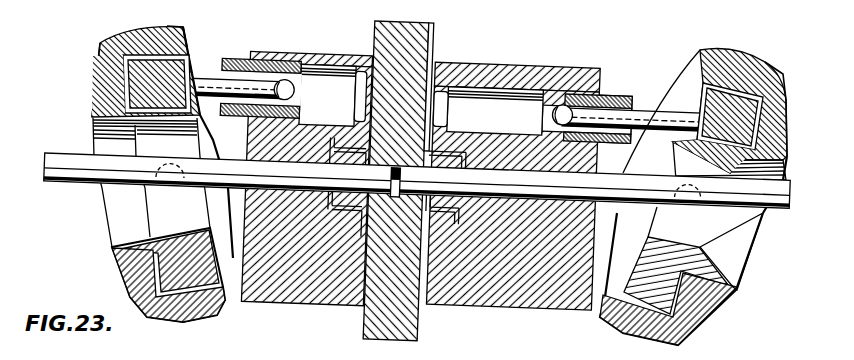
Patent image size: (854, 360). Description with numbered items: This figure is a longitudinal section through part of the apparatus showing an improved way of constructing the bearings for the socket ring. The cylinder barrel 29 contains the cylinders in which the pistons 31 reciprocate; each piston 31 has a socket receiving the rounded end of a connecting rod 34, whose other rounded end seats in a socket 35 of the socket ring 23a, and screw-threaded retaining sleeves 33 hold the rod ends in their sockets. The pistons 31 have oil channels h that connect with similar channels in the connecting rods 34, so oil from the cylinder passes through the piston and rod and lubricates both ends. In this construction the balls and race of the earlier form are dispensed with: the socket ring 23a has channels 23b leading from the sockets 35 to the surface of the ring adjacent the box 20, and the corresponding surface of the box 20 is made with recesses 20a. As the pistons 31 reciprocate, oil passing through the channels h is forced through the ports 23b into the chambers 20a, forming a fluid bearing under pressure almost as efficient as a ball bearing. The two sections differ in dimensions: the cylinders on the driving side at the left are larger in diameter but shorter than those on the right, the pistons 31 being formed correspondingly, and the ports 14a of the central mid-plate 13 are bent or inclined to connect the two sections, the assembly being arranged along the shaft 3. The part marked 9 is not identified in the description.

The shaft 3 is at (75, 181).
The link rod 9 is at (212, 88).
The central flange 13 is at (416, 324).
The ports of the mid-plate 14a is at (436, 58).
The box 20 is at (103, 35).
The recesses 20a is at (786, 112).
The socket ring 23a is at (706, 84).
The channels 23b is at (690, 157).
The cylinder barrel 29 is at (328, 300).
The pistons 31 is at (305, 58).
The retaining sleeves 33 is at (238, 60).
The connecting rod 34 is at (706, 104).
The sockets 35 is at (184, 27).
The oil channels h is at (303, 97).